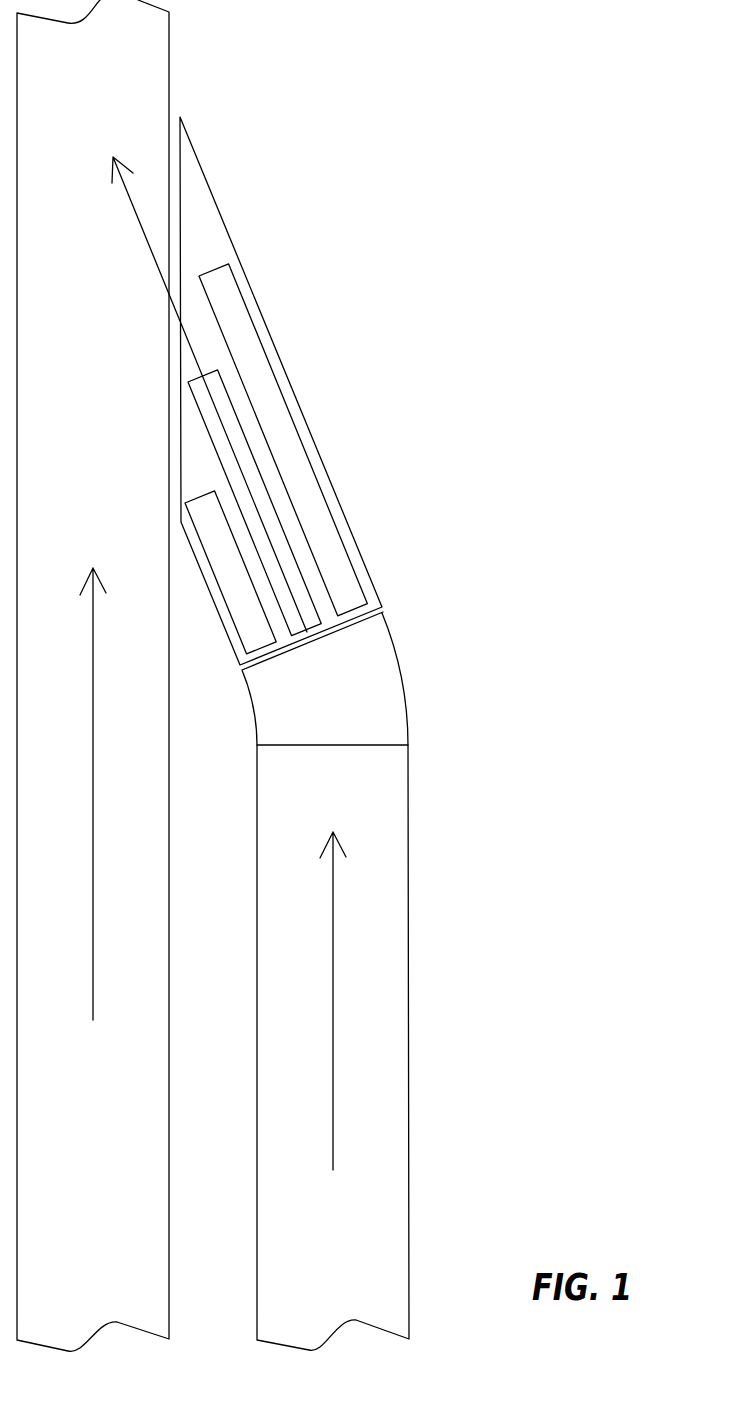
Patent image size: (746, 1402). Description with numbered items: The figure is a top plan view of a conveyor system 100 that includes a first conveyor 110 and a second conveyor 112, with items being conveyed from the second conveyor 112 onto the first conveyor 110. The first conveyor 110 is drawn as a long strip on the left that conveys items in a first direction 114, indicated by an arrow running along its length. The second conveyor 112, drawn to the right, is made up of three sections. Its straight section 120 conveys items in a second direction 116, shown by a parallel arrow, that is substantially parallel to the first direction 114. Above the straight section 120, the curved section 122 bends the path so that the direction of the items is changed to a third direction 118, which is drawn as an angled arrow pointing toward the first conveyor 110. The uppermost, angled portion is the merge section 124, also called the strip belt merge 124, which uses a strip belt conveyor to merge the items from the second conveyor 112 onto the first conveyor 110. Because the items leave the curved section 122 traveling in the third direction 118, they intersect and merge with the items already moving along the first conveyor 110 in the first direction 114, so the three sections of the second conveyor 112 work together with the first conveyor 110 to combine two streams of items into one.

The conveyor system 100 is at (400, 167).
The first conveyor 110 is at (172, 58).
The second conveyor 112 is at (338, 733).
The first direction 114 is at (93, 827).
The second direction 116 is at (333, 1001).
The third direction 118 is at (135, 208).
The straight section 120 is at (408, 842).
The curved section 122 is at (403, 675).
The strip belt merge 124 is at (330, 482).